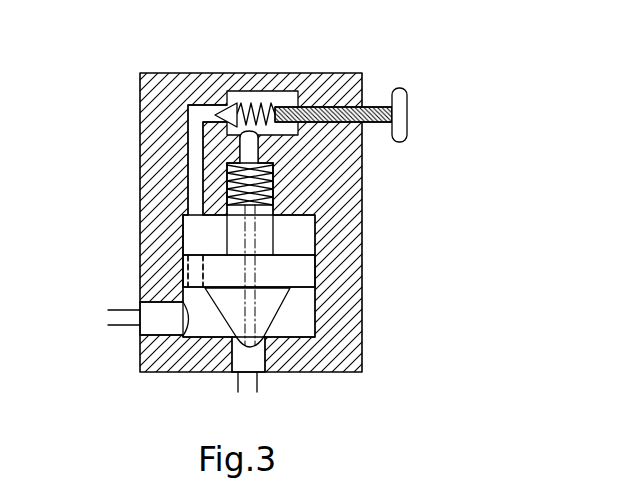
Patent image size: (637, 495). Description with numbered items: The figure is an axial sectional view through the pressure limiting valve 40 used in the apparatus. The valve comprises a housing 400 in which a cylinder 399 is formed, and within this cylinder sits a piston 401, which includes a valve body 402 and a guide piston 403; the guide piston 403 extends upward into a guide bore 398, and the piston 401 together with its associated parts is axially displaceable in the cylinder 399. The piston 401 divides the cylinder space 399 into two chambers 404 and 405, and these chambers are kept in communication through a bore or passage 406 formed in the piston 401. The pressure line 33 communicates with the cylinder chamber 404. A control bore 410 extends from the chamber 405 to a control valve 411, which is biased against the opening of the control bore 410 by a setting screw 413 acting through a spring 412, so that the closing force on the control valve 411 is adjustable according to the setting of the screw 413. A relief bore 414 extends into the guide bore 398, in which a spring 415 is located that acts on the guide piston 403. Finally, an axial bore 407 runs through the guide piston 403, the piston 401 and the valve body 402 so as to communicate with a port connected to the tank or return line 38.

The pressure limiting valve 40 is at (483, 247).
The pressure line 33 is at (112, 321).
The tank or return line 38 is at (250, 387).
The guide bore 398 is at (268, 187).
The cylinder 399 is at (183, 240).
The housing 400 is at (354, 289).
The piston 401 is at (306, 266).
The valve body 402 is at (237, 320).
The guide piston 403 is at (268, 224).
The chamber 404 is at (307, 309).
The chamber 405 is at (193, 232).
The bore or passage 406 is at (195, 266).
The axial bore 407 is at (263, 341).
The control bore 410 is at (193, 146).
The control valve 411 is at (227, 105).
The spring 412 is at (266, 108).
The setting screw 413 is at (378, 110).
The relief bore 414 is at (253, 150).
The spring 415 is at (227, 181).